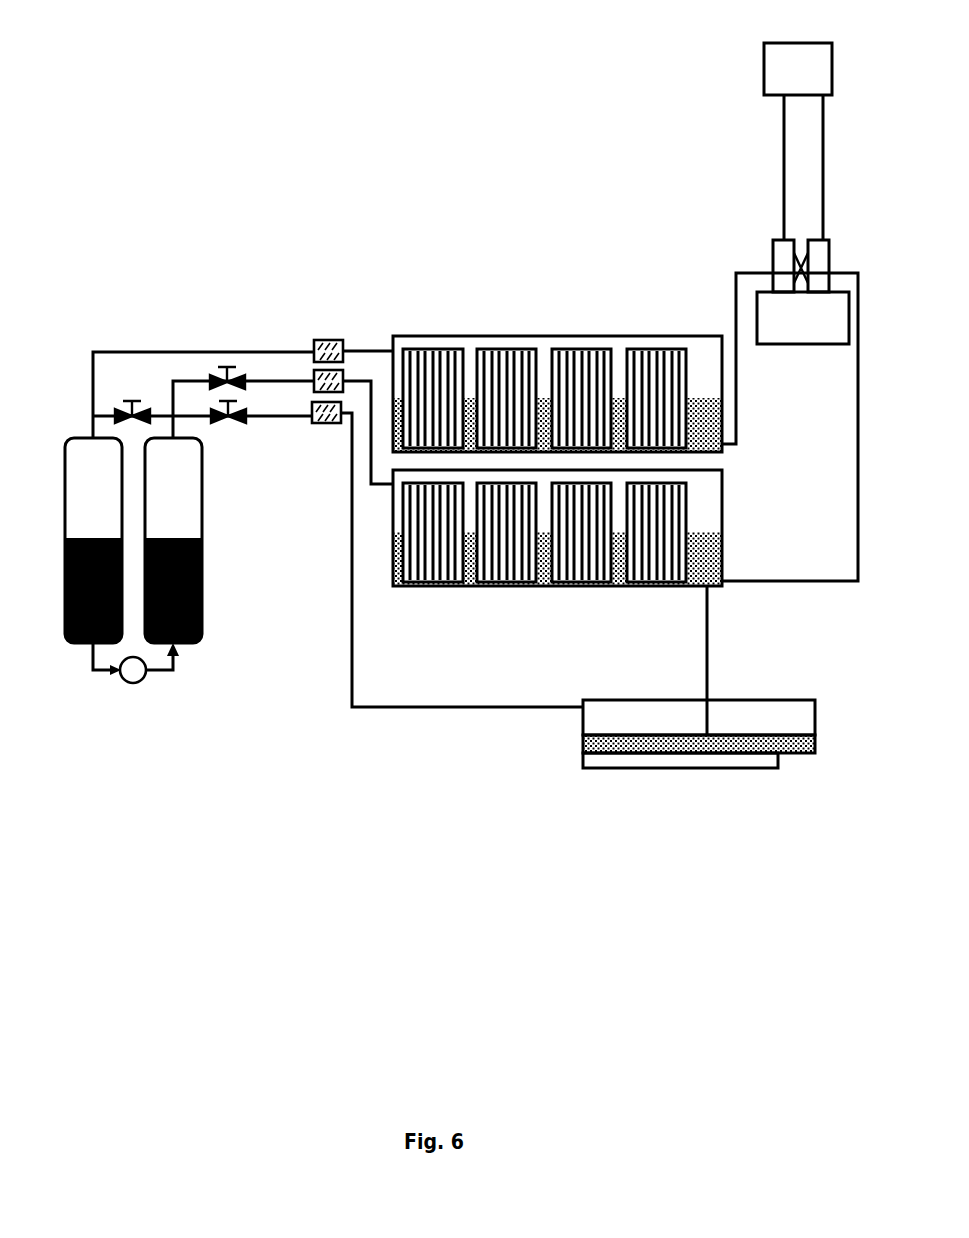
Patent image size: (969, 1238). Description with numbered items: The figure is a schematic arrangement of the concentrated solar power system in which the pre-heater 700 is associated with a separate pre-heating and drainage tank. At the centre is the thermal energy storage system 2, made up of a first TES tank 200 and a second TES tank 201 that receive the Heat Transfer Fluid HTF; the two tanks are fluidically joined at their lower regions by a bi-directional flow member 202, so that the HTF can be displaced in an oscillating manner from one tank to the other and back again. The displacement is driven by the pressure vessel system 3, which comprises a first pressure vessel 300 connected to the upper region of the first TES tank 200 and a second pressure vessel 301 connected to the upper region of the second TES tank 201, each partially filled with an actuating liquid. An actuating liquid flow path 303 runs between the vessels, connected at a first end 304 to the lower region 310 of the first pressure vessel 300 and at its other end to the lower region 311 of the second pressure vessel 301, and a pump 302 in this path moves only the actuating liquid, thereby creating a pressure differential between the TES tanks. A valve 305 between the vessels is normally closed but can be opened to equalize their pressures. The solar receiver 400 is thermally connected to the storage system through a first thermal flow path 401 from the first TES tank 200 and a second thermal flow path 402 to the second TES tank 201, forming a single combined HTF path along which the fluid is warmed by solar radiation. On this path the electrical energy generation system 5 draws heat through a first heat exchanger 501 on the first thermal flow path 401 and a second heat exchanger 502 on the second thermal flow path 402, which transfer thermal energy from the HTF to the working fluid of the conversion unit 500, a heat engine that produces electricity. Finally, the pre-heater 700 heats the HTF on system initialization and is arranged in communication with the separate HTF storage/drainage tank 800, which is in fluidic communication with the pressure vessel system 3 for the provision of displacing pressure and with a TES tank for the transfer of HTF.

The thermal energy storage system 2 is at (530, 597).
The pressure vessel system 3 is at (115, 707).
The electrical energy generation system 5 is at (761, 353).
The first thermal energy storage tank 200 is at (472, 338).
The second thermal energy storage tank 201 is at (470, 588).
The bi-directional flow member 202 is at (775, 580).
The first pressure vessel 300 is at (70, 438).
The second pressure vessel 301 is at (205, 493).
The pump 302 is at (132, 683).
The actuating liquid flow path 303 is at (171, 680).
The first end of actuating liquid flow path 304 is at (92, 652).
The valve 305 is at (138, 398).
The lower region of first pressure vessel 310 is at (62, 636).
The lower region of second pressure vessel 311 is at (205, 627).
The solar receiver 400 is at (763, 64).
The first thermal flow path 401 is at (783, 176).
The second thermal flow path 402 is at (752, 580).
The conversion unit 500 is at (770, 345).
The first heat exchanger 501 is at (773, 245).
The second heat exchanger 502 is at (829, 266).
The pre-heater 700 is at (722, 768).
The HTF storage/drainage tank 800 is at (808, 755).
The Heat Transfer Fluid HTF is at (472, 576).